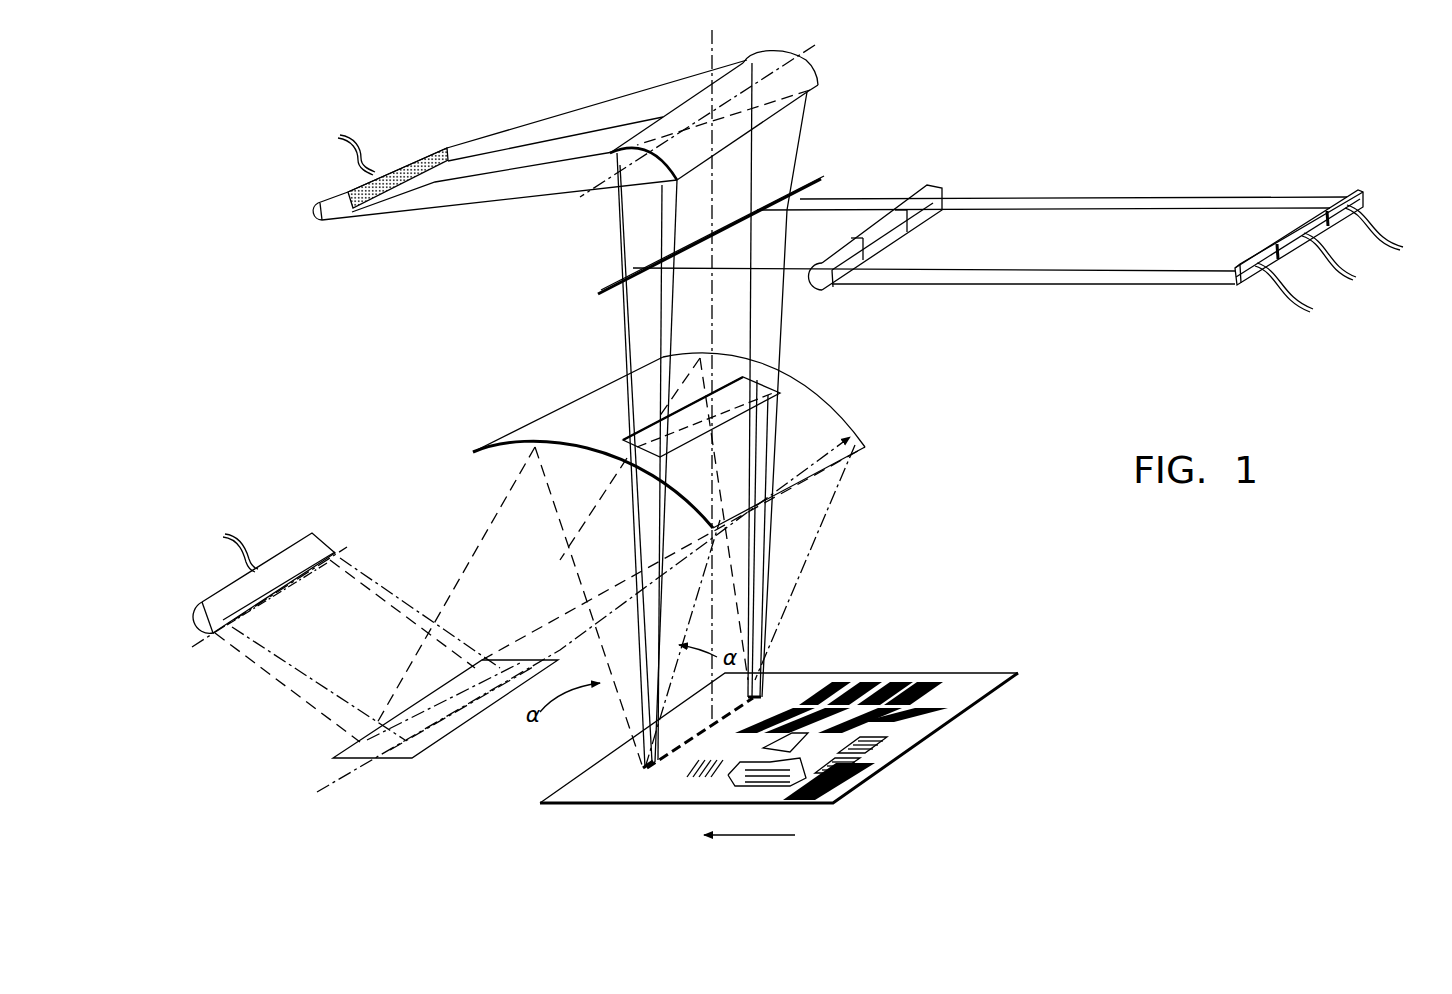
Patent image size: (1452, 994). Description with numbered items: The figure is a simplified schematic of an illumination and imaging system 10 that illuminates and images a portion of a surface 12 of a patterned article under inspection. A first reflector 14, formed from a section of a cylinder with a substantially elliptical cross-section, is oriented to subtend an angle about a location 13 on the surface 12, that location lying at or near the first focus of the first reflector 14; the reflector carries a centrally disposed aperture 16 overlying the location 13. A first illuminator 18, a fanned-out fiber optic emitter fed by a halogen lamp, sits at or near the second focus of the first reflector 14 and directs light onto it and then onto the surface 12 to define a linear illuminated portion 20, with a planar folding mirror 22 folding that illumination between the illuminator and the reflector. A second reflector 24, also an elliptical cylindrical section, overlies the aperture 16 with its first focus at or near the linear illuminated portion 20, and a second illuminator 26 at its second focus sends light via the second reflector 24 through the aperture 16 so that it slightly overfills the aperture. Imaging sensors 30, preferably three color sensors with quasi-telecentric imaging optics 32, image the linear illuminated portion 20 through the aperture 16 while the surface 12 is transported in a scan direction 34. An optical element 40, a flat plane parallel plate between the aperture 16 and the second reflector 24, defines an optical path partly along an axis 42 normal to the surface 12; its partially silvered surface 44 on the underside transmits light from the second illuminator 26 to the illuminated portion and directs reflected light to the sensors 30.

The illumination and imaging system 10 is at (272, 114).
The surface 12 is at (923, 673).
The location 13 is at (637, 790).
The first reflector 14 is at (563, 417).
The aperture 16 is at (727, 415).
The first illuminator 18 is at (220, 598).
The linear illuminated portion 20 is at (673, 753).
The planar folding mirror 22 is at (381, 760).
The second reflector 24 is at (802, 82).
The second illuminator 26 is at (427, 151).
The imaging sensors 30 is at (1372, 173).
The quasi-telecentric imaging optics 32 is at (941, 163).
The scan direction 34 is at (740, 837).
The optical element 40 is at (818, 180).
The axis 42 is at (708, 53).
The partially silvered surface 44 is at (602, 293).